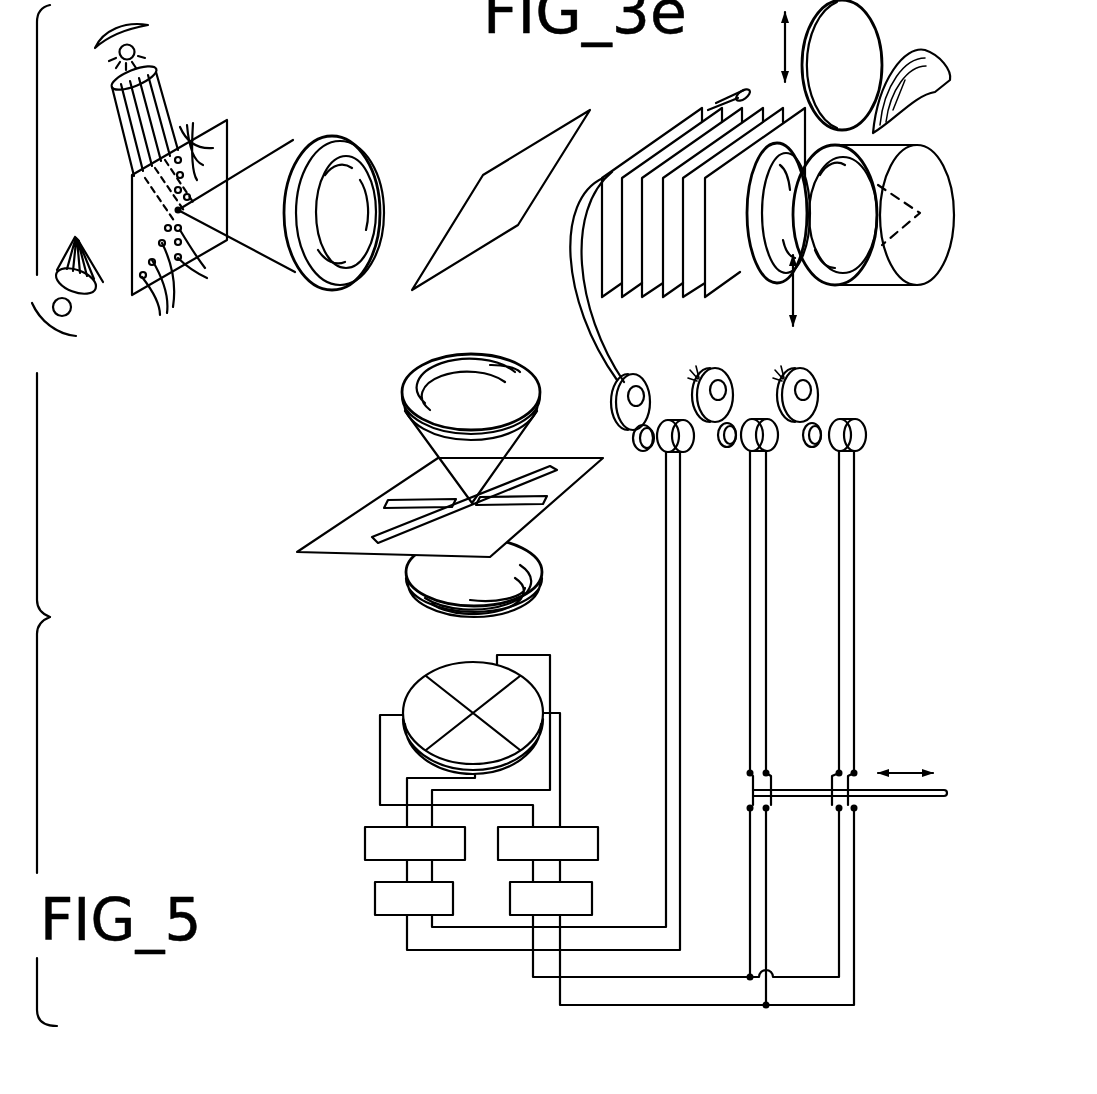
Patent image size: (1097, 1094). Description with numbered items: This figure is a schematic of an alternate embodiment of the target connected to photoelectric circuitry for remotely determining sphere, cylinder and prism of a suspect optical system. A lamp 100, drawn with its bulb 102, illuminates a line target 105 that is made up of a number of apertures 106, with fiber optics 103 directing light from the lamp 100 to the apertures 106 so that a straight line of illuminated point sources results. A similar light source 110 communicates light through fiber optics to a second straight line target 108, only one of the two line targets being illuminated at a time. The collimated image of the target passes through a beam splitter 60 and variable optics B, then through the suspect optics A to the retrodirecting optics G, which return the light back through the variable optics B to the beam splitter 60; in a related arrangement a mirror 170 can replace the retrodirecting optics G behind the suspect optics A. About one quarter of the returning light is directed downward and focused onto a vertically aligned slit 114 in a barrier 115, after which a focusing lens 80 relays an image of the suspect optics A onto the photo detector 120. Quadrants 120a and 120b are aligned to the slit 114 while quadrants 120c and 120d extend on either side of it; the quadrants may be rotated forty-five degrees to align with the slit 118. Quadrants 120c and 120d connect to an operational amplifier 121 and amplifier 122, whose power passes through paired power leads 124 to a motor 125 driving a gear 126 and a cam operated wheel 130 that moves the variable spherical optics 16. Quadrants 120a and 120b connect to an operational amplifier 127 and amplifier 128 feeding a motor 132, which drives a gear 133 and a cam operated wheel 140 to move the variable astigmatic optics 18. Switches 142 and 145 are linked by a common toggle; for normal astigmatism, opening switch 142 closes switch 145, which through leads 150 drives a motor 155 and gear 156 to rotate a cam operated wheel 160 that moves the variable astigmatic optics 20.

The lamp 100 is at (155, 38).
The lamp 102 is at (157, 60).
The fiber optics 103 is at (165, 103).
The line target 105 is at (232, 141).
The apertures 106 is at (220, 266).
The straight line target 108 is at (186, 218).
The light source 110 is at (87, 327).
The beam splitter 60 is at (525, 148).
The variable optics B is at (701, 204).
The variable spherical optics 16 is at (630, 303).
The variable astigmatic optics 18 is at (670, 303).
The variable astigmatic optics 20 is at (710, 303).
The suspect optics A is at (765, 266).
The retrodirecting optics G is at (900, 289).
The mirror 170 is at (862, 67).
The cam operated wheel 130 is at (647, 383).
The cam operated wheel 140 is at (722, 370).
The cam operated wheel 160 is at (820, 374).
The gear 126 is at (645, 455).
The gear 133 is at (735, 426).
The gear 156 is at (821, 423).
The motor 125 is at (692, 449).
The motor 132 is at (778, 448).
The motor 155 is at (864, 427).
The slit 114 is at (413, 502).
The slit 118 is at (423, 522).
The barrier 115 is at (450, 498).
The focusing lens 80 is at (406, 573).
The photo detector 120 is at (487, 710).
The quadrant 120a is at (398, 711).
The quadrant 120b is at (540, 697).
The quadrant 120c is at (498, 761).
The quadrant 120d is at (500, 694).
The operational amplifier 121 is at (364, 847).
The amplifier 122 is at (388, 916).
The paired power leads 124 is at (667, 729).
The operational amplifier 127 is at (580, 827).
The amplifier 128 is at (582, 883).
The switch 142 is at (777, 810).
The switch 145 is at (872, 815).
The leads 150 is at (834, 685).